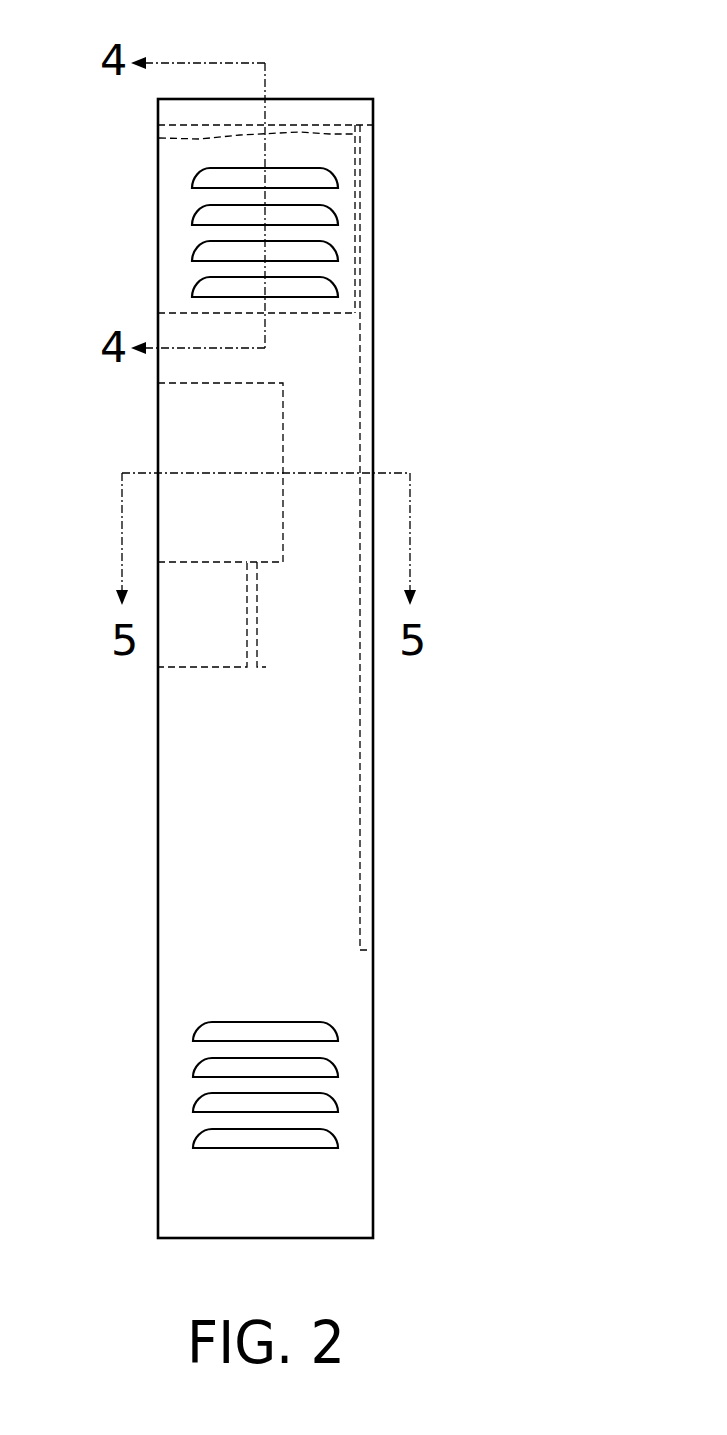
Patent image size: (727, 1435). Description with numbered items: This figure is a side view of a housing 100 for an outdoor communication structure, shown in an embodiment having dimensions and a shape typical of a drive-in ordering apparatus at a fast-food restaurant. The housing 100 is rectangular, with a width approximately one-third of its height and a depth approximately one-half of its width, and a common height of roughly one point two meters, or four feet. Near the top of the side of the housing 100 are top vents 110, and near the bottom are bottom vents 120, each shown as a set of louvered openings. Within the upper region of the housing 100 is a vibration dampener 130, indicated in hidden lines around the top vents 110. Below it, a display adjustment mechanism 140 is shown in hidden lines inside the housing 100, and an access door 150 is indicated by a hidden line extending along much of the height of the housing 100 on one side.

The housing 100 is at (314, 65).
The top vents 110 is at (336, 217).
The bottom vents 120 is at (338, 1067).
The vibration dampener 130 is at (290, 313).
The display adjustment mechanism 140 is at (213, 714).
The access door 150 is at (375, 827).